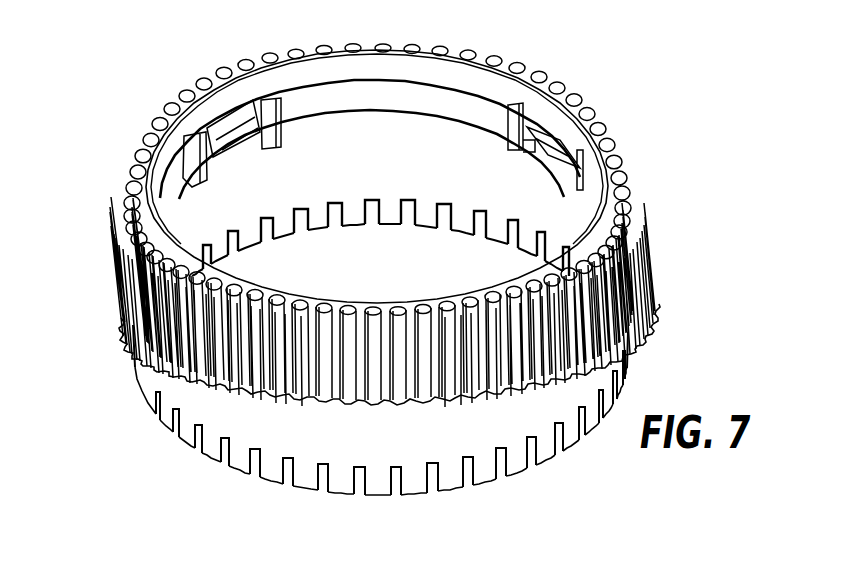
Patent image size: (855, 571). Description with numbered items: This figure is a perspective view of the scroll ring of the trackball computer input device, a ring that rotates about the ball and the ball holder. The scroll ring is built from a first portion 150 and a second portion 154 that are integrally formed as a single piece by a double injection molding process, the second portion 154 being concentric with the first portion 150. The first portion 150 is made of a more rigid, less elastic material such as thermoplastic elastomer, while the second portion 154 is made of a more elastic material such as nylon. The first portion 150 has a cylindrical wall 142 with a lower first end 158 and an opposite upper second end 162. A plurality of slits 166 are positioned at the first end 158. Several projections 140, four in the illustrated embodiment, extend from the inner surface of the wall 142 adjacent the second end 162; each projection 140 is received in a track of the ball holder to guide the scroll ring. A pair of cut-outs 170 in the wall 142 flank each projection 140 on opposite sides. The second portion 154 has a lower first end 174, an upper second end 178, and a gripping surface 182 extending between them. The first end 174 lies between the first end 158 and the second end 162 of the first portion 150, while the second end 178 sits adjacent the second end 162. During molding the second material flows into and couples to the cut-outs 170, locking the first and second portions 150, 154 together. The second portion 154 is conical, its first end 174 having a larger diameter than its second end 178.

The projection 140 is at (232, 113).
The wall 142 is at (543, 195).
The first portion 150 is at (173, 378).
The second portion 154 is at (110, 240).
The first end 158 is at (173, 443).
The second end 162 is at (412, 77).
The slits 166 is at (220, 75).
The cut-outs 170 is at (190, 183).
The first end 174 is at (640, 297).
The second end 178 is at (603, 118).
The gripping surface 182 is at (641, 191).